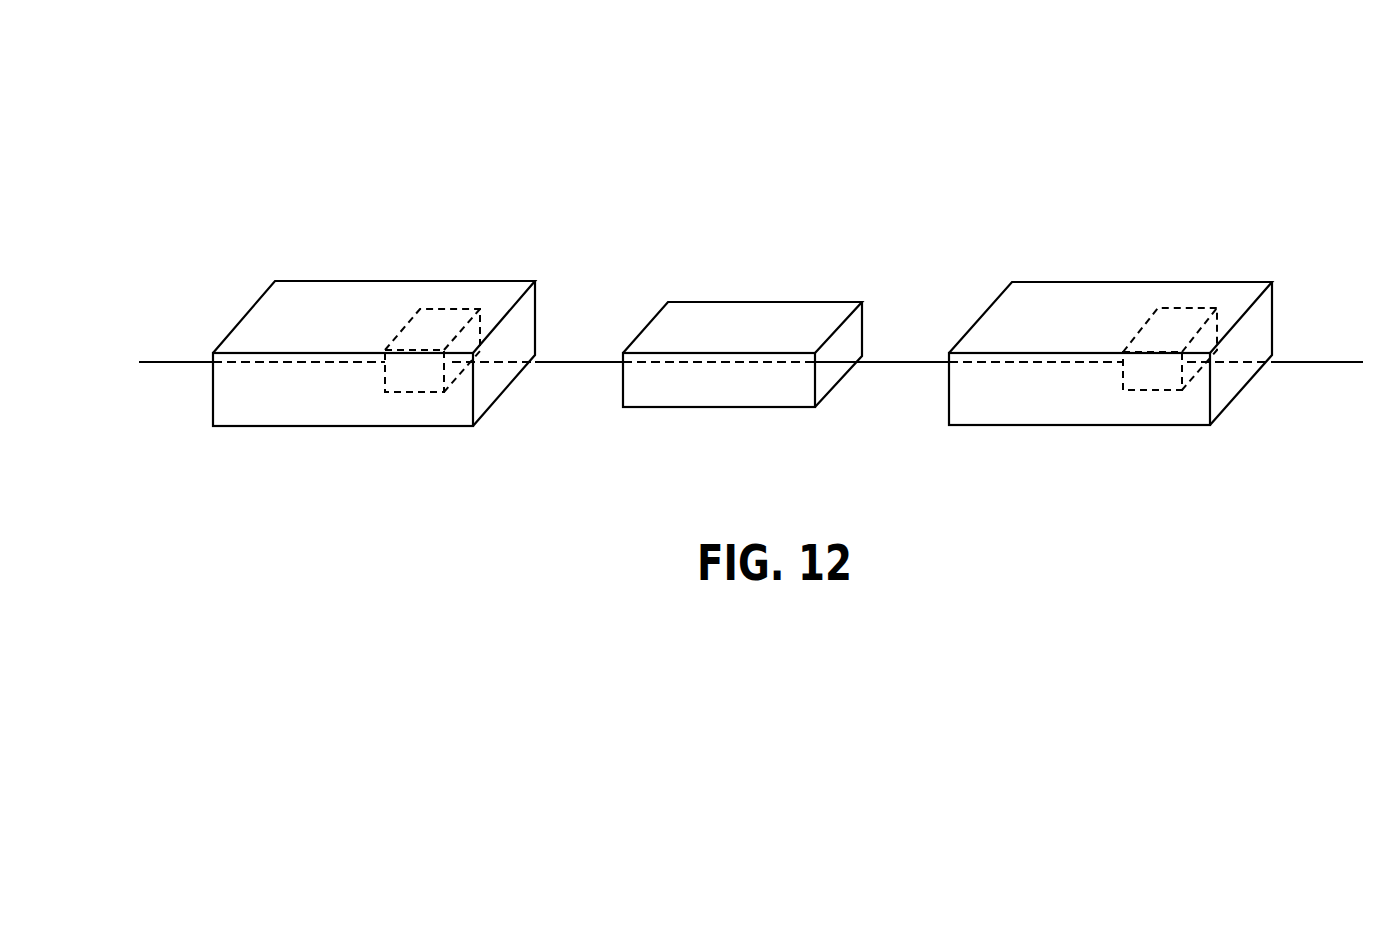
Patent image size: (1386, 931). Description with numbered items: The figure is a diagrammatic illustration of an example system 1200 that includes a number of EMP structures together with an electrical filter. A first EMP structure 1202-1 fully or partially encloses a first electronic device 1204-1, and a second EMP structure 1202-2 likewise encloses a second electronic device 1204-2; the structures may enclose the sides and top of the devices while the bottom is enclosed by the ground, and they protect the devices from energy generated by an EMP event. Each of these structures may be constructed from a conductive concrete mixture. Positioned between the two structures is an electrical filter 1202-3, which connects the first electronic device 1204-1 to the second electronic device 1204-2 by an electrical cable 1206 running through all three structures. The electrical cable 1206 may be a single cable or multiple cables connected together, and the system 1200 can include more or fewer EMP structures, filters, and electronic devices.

The system 1200 is at (832, 88).
The first EMP structure 1202-1 is at (385, 293).
The second EMP structure 1202-2 is at (1108, 293).
The electrical filter 1202-3 is at (758, 308).
The first electronic device 1204-1 is at (448, 317).
The second electronic device 1204-2 is at (1183, 318).
The electrical cable 1206 is at (185, 360).